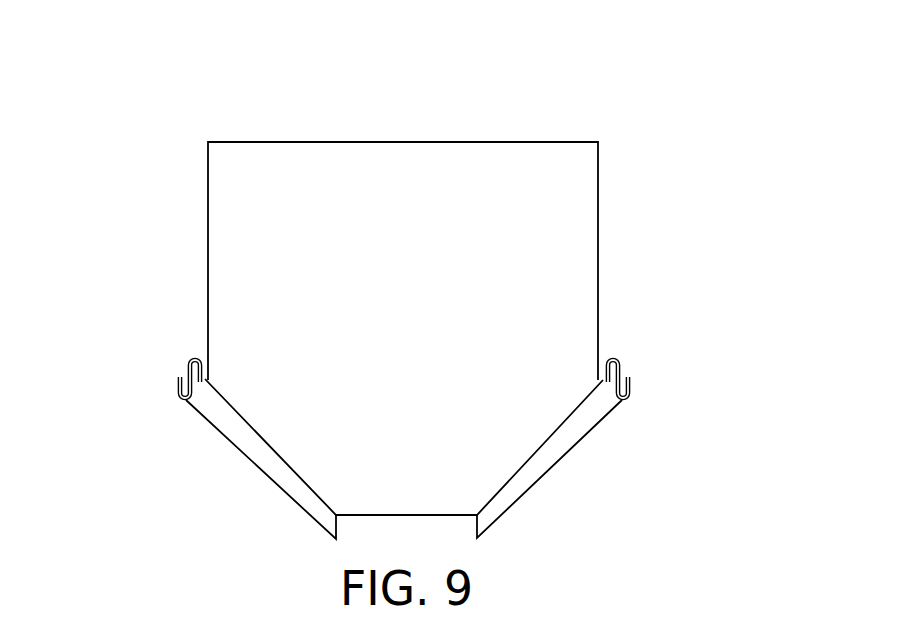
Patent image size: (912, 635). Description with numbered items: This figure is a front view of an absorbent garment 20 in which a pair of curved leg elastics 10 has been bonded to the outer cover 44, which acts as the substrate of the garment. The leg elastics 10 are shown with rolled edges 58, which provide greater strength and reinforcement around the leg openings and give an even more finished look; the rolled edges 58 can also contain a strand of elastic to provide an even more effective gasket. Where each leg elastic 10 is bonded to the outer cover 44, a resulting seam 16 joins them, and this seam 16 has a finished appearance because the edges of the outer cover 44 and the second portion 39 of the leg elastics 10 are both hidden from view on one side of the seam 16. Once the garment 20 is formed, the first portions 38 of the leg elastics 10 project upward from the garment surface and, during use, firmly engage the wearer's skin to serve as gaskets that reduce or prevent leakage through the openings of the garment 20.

The absorbent garment 20 is at (522, 122).
The outer cover 44 is at (363, 175).
The curved leg elastics 10 is at (182, 350).
The seam 16 is at (196, 350).
The rolled edges 58 is at (220, 433).
The first portions 38 is at (187, 373).
The second portion 39 is at (207, 373).